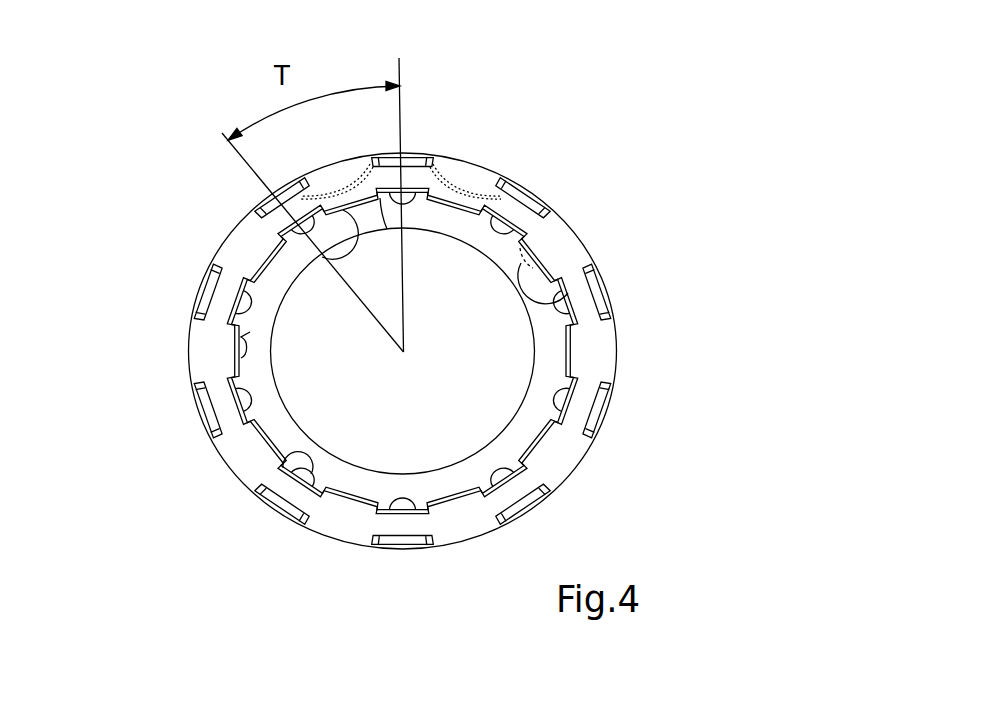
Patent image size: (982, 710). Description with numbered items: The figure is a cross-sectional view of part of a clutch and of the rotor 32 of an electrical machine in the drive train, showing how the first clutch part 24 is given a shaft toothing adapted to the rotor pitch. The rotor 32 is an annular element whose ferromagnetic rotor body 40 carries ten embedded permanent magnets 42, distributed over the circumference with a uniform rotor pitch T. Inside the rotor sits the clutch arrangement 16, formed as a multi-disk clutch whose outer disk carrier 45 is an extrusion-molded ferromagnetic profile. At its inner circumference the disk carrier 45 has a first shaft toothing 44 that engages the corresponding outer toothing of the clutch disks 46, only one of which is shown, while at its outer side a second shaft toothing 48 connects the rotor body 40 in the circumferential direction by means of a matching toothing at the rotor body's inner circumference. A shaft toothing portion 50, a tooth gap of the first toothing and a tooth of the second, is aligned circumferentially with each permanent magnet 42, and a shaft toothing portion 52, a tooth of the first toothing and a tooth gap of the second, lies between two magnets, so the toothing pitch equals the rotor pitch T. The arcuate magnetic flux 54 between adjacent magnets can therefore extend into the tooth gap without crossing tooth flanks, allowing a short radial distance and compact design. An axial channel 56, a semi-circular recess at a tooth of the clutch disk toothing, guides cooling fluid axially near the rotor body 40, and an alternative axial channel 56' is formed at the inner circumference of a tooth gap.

The clutch arrangement 16 is at (677, 137).
The rotor 32 is at (221, 237).
The first clutch part 24 is at (546, 445).
The rotor body 40 is at (578, 353).
The permanent magnets 42 is at (607, 301).
The first shaft toothing 44 is at (241, 358).
The disk carrier 45 is at (460, 500).
The clutch disks 46 is at (281, 430).
The second shaft toothing 48 is at (350, 503).
The shaft toothing portion 50 is at (300, 305).
The shaft toothing portion 52 is at (322, 257).
The magnetic flux 54 is at (442, 186).
The axial channel 56 is at (234, 532).
The axial channel 56' is at (645, 245).